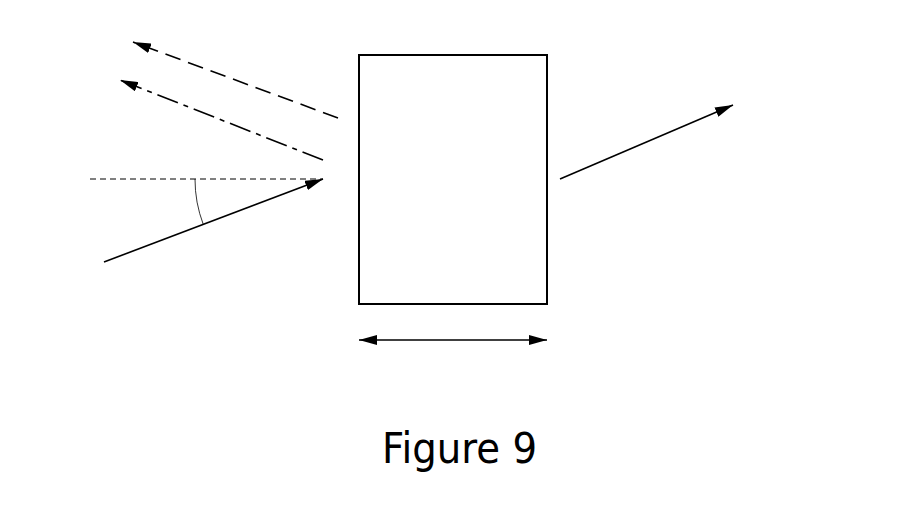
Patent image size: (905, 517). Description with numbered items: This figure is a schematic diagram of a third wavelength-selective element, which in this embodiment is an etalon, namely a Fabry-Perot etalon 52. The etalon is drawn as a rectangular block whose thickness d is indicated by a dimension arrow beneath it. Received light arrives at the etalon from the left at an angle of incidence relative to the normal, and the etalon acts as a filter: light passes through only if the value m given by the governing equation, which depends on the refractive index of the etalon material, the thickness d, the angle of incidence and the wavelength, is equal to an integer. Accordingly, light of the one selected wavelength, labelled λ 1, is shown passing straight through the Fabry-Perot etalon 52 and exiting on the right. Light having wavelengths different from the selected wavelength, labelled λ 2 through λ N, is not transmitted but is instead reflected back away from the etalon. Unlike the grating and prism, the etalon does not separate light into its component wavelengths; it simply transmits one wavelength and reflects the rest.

The Fabry-Perot etalon 52 is at (337, 338).
The thickness of the etalon d is at (453, 358).
The transmitted beam of wavelength λ 1 is at (657, 142).
The reflected beam of wavelength λ 2 is at (202, 110).
The reflected beam of wavelength λ N is at (215, 64).